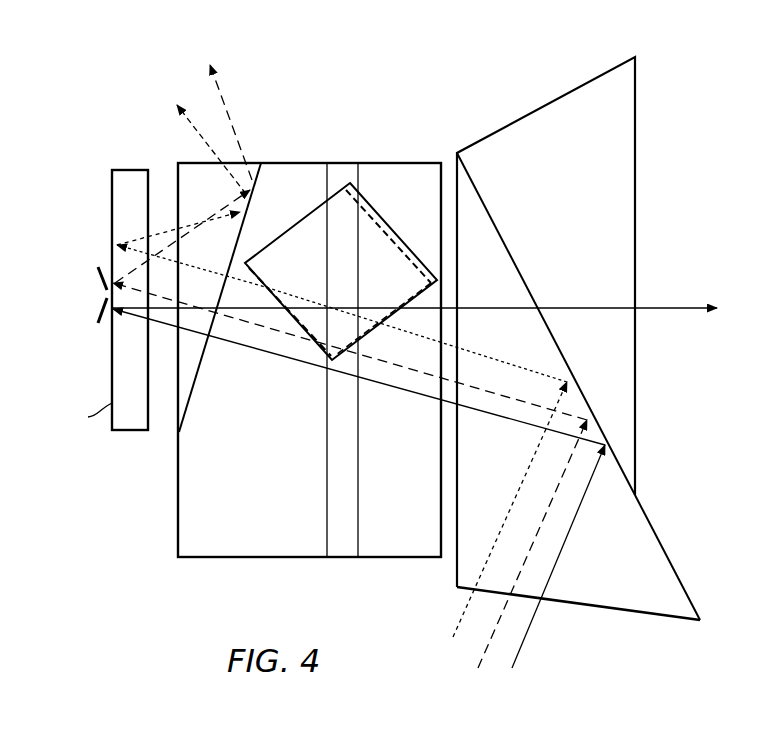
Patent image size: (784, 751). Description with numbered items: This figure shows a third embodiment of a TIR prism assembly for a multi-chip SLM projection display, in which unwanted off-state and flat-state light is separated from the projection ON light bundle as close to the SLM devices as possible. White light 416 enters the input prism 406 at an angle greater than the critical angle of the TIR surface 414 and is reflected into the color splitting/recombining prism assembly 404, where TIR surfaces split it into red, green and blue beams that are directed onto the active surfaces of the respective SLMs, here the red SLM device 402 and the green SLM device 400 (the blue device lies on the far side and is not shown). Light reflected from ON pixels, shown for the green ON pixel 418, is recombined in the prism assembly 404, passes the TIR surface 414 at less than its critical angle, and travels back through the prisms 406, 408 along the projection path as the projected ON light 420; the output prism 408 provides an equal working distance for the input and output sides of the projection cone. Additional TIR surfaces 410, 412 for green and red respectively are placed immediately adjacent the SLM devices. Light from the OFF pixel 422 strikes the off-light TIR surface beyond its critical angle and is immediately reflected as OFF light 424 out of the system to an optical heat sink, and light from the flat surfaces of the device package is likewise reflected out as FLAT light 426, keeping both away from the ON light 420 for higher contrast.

The green SLM device 400 is at (112, 197).
The red SLM device 402 is at (378, 212).
The color splitting/recombining prism assembly 404 is at (249, 557).
The input prism 406 is at (610, 611).
The output prism 408 is at (637, 150).
The TIR surface for green 410 is at (255, 163).
The TIR surface for red 412 is at (343, 557).
The TIR surface 414 is at (593, 420).
The white light 416 is at (515, 675).
The ON pixel 418 is at (97, 318).
The projected ON light 420 is at (662, 307).
The OFF pixel 422 is at (97, 272).
The reflected OFF light 424 is at (230, 112).
The reflected FLAT light 426 is at (195, 131).